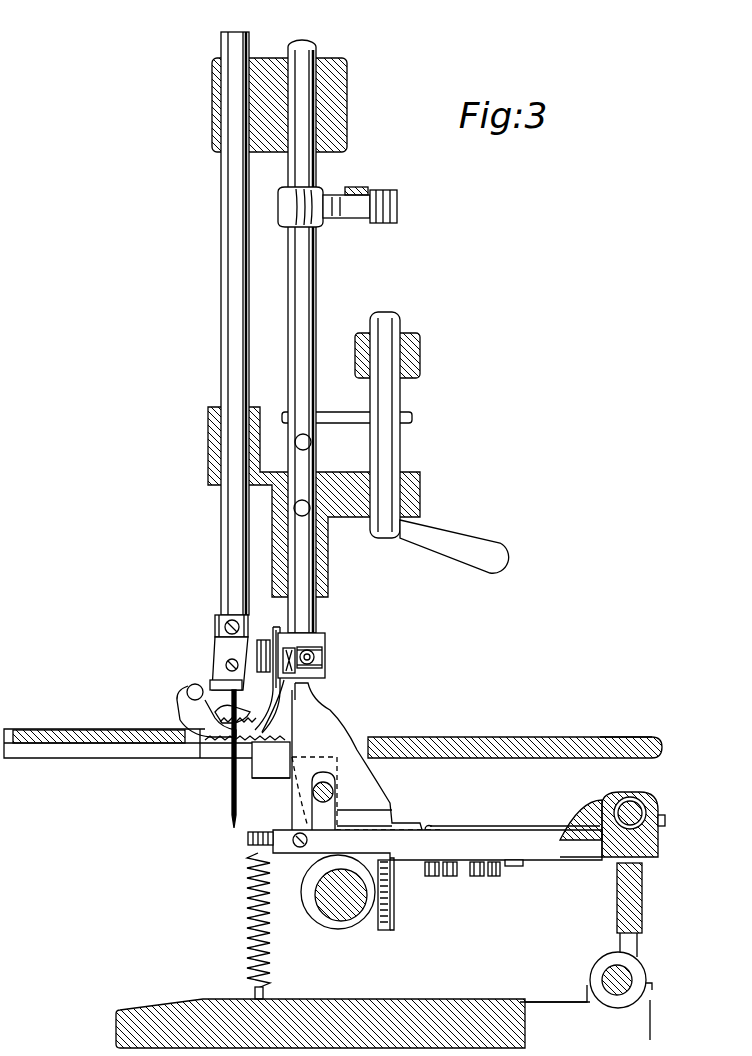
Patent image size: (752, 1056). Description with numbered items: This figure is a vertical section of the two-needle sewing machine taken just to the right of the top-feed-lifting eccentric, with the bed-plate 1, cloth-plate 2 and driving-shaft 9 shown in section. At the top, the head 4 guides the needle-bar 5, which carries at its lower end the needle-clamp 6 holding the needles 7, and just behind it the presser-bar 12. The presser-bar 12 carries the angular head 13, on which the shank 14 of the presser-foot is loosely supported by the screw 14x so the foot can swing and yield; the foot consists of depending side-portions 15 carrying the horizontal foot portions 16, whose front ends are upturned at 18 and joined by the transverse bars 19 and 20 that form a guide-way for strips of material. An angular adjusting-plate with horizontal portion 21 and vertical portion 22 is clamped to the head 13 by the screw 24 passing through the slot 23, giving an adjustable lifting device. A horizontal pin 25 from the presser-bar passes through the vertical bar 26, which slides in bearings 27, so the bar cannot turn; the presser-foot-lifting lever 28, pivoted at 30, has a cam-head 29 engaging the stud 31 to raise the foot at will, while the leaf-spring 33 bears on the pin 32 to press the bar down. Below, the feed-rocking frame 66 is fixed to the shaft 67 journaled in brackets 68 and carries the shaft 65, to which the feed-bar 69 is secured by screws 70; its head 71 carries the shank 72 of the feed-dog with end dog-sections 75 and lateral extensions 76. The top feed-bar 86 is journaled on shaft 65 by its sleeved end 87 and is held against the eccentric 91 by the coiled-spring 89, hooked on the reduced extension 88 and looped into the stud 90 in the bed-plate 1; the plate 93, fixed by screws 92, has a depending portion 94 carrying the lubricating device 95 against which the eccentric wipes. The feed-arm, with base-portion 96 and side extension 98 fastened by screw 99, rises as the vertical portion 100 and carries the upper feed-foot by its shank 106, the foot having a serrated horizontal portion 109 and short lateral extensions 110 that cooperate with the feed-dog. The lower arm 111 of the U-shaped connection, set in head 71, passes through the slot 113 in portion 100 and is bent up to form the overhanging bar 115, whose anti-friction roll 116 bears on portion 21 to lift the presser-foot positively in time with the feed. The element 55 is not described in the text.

The bed-plate 1 is at (430, 1010).
The cloth-plate 2 is at (605, 737).
The head 4 is at (336, 122).
The needle-bar 5 is at (230, 240).
The needle-clamp 6 is at (222, 640).
The needles 7 is at (230, 800).
The driving-shaft 9 is at (346, 906).
The presser-bar 12 is at (316, 292).
The angular head 13 is at (322, 656).
The shank of the presser-foot 14 is at (272, 640).
The screw 14x is at (278, 656).
The depending side-portions 15 is at (285, 726).
The foot portions 16 is at (215, 735).
The upturned portions 18 is at (180, 722).
The transverse bar 19 is at (178, 700).
The transverse bar 20 is at (189, 689).
The horizontal portion of adjusting-plate 21 is at (318, 641).
The vertical portion of adjusting-plate 22 is at (226, 660).
The longitudinal slot 23 is at (292, 670).
The screw 24 is at (322, 662).
The horizontal pin 25 is at (412, 418).
The vertical bar 26 is at (400, 462).
The bearings 27 is at (420, 360).
The presser-foot-lifting lever 28 is at (462, 540).
The cam-head 29 is at (300, 482).
The pivot 30 is at (310, 515).
The stud or pin 31 is at (296, 440).
The pin or bar 32 is at (360, 218).
The leaf-spring 33 is at (368, 193).
The work plate 55 is at (75, 730).
The shaft 65 is at (646, 801).
The feed-rocking frame 66 is at (643, 916).
The shaft 67 is at (635, 976).
The brackets 68 is at (590, 980).
The feed-bar 69 is at (511, 829).
The screws 70 is at (666, 822).
The head 71 is at (340, 812).
The shank of the feed-dog 72 is at (396, 739).
The end dog-sections 75 is at (232, 746).
The lateral extension 76 is at (272, 762).
The top feed-bar 86 is at (575, 850).
The sleeved end 87 is at (636, 793).
The reduced extension 88 is at (248, 838).
The coiled-spring 89 is at (247, 897).
The stud or bracket 90 is at (265, 994).
The eccentric 91 is at (340, 921).
The screws 92 is at (482, 880).
The plate 93 is at (515, 867).
The depending portion 94 is at (392, 909).
The lubricating device 95 is at (391, 925).
The horizontal base-portion 96 is at (431, 826).
The side extension 98 is at (291, 813).
The screw 99 is at (299, 846).
The vertical portion 100 is at (375, 787).
The shank of the upper feed-foot 106 is at (315, 690).
The horizontal portion of the feed-foot 109 is at (230, 690).
The lateral short extensions 110 is at (282, 705).
The lower arm 111 is at (326, 782).
The slot 113 is at (336, 826).
The overhanging bar 115 is at (322, 661).
The anti-friction roll 116 is at (322, 653).